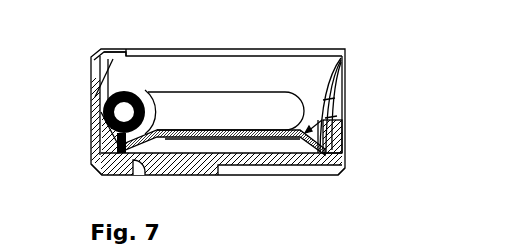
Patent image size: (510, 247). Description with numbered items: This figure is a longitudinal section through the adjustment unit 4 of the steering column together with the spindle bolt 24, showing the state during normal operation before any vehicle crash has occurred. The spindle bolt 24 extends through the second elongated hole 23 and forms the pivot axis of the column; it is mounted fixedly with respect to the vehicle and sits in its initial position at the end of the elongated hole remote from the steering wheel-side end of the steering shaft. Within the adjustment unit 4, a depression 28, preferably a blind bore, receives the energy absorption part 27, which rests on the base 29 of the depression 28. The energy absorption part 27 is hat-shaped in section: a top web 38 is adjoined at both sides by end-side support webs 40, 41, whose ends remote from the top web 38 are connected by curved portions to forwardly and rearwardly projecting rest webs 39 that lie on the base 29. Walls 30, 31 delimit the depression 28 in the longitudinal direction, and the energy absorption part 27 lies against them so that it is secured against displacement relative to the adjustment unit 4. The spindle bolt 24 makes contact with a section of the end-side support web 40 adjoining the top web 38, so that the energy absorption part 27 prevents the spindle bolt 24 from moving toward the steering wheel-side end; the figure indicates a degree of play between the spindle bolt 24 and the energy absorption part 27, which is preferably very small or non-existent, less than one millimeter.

The adjustment unit 4 is at (349, 163).
The second elongated hole 23 is at (178, 105).
The spindle bolt 24 is at (101, 110).
The energy absorption part 27 is at (338, 88).
The depression 28 is at (205, 146).
The base 29 is at (263, 142).
The wall 30 is at (100, 150).
The wall 31 is at (345, 132).
The top web 38 is at (233, 138).
The rest web 39 is at (98, 170).
The end-side support web 40 is at (142, 138).
The end-side support web 41 is at (309, 150).